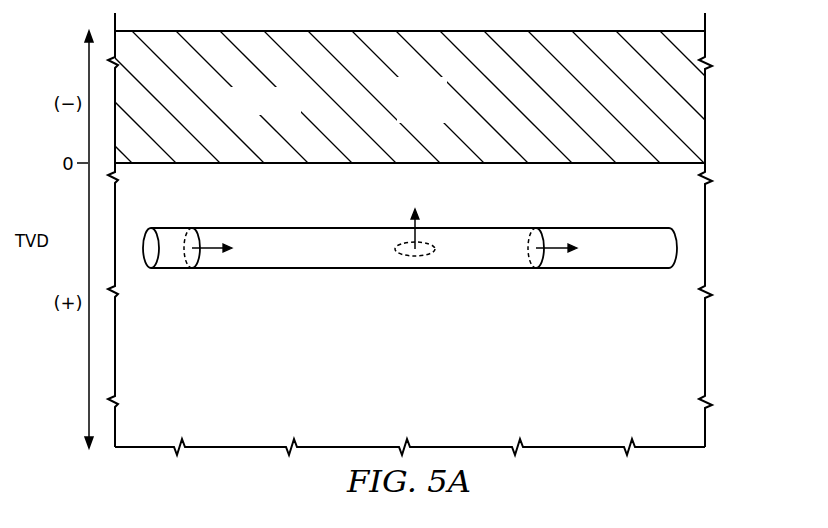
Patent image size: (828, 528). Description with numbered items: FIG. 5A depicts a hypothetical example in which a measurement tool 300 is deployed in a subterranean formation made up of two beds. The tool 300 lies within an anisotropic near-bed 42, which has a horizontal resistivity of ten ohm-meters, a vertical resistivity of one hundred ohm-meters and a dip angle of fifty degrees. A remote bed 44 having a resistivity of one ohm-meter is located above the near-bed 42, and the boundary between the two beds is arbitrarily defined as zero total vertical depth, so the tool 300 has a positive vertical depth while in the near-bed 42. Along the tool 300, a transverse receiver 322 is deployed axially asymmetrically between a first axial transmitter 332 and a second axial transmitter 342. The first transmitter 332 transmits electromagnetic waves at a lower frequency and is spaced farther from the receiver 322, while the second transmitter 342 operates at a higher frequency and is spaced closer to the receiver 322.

The remote bed 44 is at (408, 111).
The anisotropic near-bed 42 is at (523, 382).
The measurement tool 300 is at (313, 228).
The first transmitter 332 is at (199, 258).
The second transmitter antenna 342 is at (546, 258).
The transverse receiver 322 is at (394, 249).